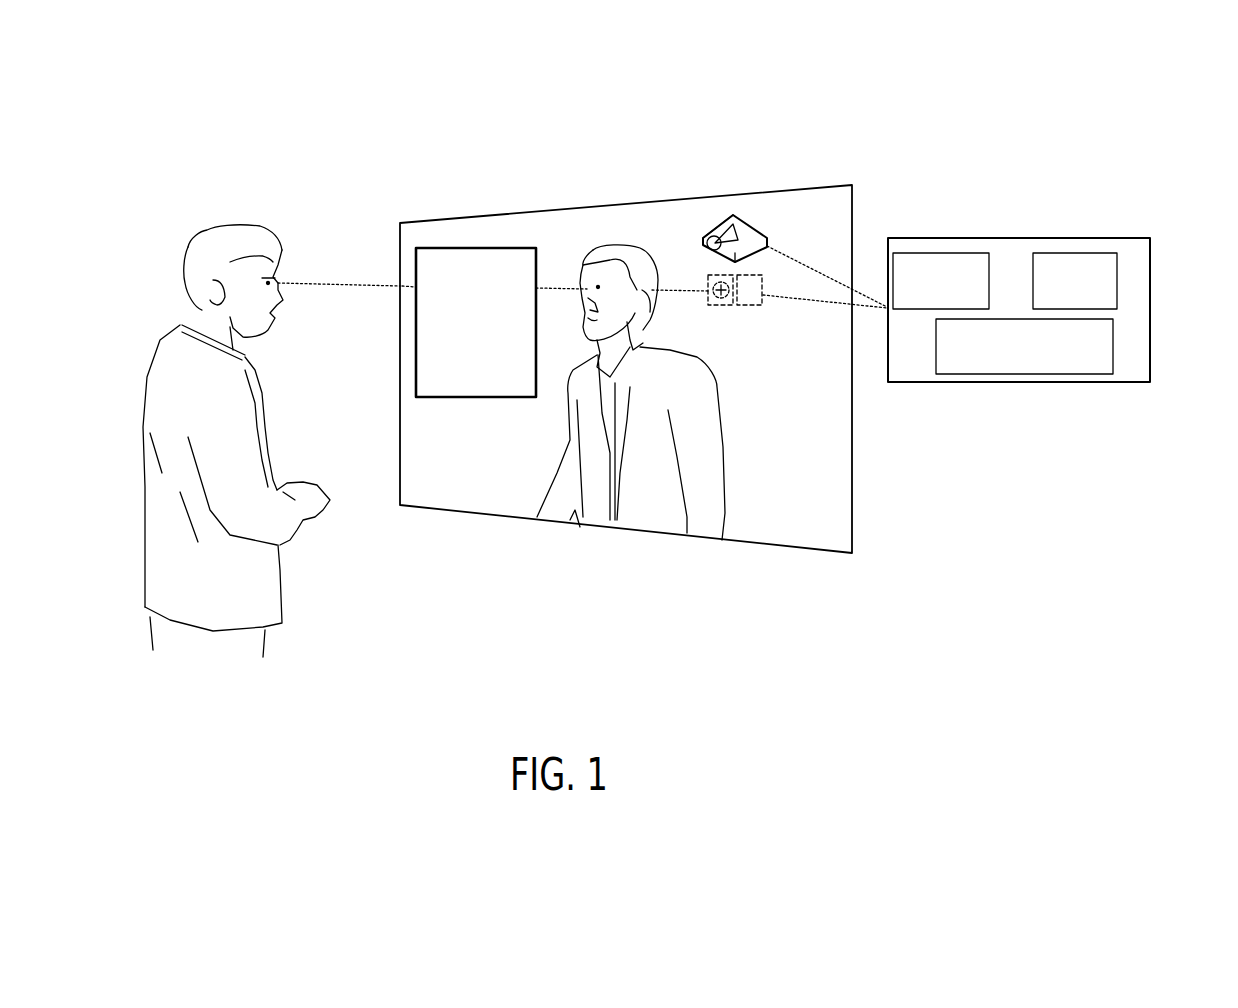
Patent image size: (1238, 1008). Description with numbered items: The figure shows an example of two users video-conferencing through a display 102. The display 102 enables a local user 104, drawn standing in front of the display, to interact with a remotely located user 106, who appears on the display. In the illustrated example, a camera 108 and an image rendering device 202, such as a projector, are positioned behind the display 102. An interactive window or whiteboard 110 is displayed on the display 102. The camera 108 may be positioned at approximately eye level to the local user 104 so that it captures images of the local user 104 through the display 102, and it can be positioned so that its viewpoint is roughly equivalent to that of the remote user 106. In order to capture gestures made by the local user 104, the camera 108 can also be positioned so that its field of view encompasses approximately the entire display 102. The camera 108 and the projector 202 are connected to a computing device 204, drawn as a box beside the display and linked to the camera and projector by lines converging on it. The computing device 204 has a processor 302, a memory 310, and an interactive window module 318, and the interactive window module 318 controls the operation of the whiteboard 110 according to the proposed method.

The display 102 is at (650, 412).
The local user 104 is at (265, 458).
The remotely located user 106 is at (682, 392).
The camera 108 is at (761, 309).
The interactive window or whiteboard 110 is at (565, 279).
The image rendering device 202 is at (763, 234).
The computing device 204 is at (1020, 331).
The processor 302 is at (941, 256).
The memory 310 is at (1068, 254).
The interactive window module 318 is at (1044, 371).